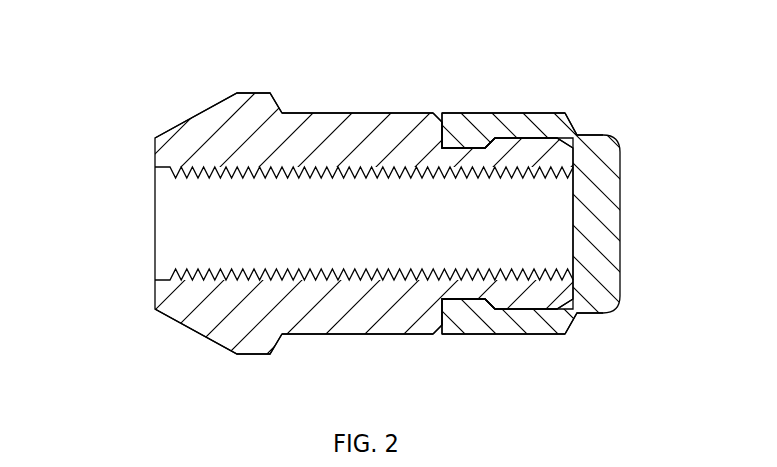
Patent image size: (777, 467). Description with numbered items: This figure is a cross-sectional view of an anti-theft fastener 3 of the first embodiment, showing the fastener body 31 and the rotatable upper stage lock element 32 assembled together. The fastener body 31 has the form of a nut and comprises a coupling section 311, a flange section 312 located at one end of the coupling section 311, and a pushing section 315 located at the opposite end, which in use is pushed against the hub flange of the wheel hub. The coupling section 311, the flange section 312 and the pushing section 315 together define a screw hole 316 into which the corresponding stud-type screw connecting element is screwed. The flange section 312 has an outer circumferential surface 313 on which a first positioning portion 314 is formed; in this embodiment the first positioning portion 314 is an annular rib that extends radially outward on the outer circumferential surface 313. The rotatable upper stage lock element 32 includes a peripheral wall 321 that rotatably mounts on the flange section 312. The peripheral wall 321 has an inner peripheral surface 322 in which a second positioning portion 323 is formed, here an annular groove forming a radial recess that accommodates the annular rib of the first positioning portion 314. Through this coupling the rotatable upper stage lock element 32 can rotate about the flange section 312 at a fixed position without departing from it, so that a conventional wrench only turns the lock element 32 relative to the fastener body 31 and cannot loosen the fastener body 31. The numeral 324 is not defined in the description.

The fastener 3 is at (80, 31).
The fastener body 31 is at (193, 100).
The coupling section 311 is at (353, 132).
The flange section 312 is at (478, 163).
The outer circumferential surface 313 is at (455, 145).
The first positioning portion 314 is at (520, 145).
The pushing section 315 is at (213, 310).
The screw hole 316 is at (190, 222).
The rotatable upper stage lock element 32 is at (600, 120).
The peripheral wall 321 is at (523, 320).
The inner peripheral surface 322 is at (578, 313).
The second positioning portion 323 is at (507, 310).
The outer wall 324 is at (545, 330).